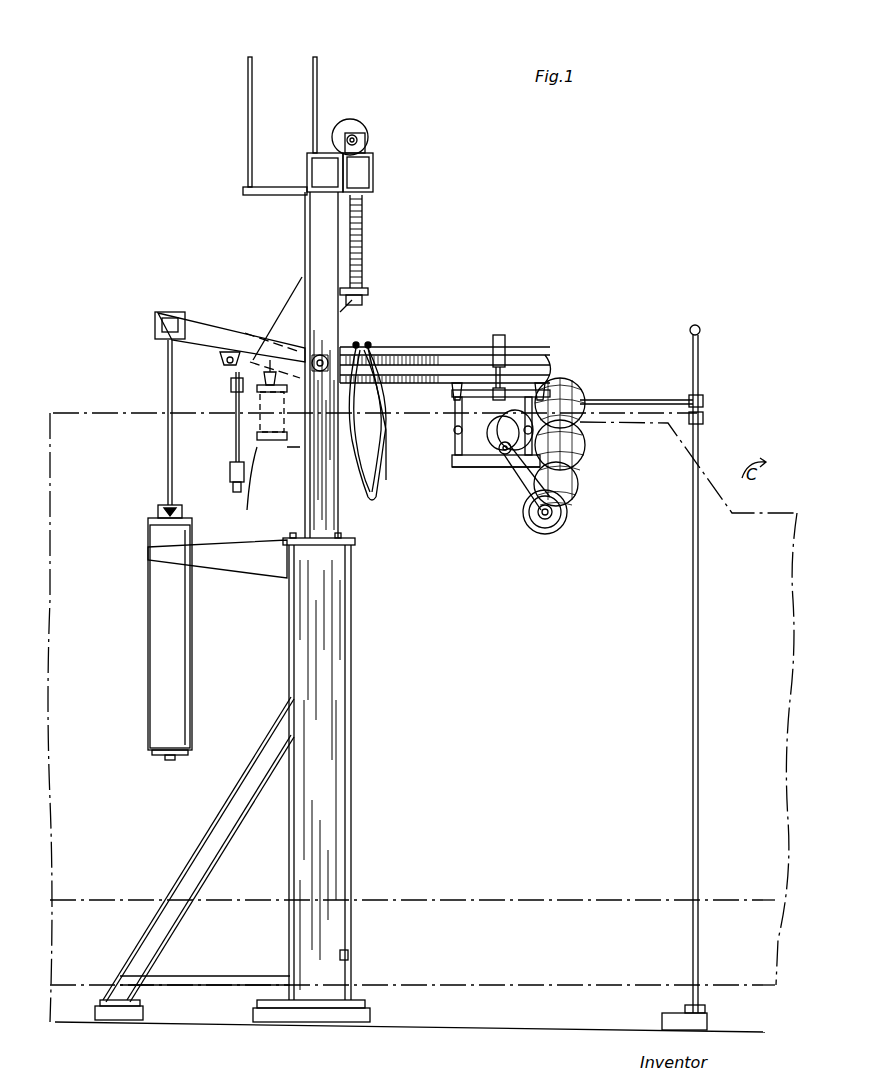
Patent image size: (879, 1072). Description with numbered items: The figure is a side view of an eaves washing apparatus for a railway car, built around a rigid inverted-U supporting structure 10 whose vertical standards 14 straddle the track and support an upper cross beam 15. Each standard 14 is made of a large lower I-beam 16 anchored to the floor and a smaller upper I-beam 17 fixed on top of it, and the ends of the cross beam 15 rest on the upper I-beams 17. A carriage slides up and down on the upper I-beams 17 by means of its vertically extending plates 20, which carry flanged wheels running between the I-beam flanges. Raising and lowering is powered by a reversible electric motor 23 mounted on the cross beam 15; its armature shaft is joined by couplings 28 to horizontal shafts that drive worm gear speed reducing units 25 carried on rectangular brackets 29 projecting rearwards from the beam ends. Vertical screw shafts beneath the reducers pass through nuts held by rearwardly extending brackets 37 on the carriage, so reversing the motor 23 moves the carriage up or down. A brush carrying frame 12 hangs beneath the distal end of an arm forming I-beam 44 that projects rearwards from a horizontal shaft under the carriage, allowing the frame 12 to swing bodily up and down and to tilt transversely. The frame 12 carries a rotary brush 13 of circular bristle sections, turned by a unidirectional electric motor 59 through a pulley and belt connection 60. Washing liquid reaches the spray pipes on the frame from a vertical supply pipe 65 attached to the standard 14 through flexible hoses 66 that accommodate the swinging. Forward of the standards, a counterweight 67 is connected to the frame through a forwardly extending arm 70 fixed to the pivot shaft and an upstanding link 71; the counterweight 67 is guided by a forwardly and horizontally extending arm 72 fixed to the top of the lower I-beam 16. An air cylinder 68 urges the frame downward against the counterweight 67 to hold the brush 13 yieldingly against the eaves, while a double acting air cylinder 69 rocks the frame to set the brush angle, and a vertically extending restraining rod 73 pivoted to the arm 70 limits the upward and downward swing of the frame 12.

The supporting structure 10 is at (280, 866).
The frames 12 is at (484, 472).
The brushes 13 is at (586, 465).
The vertical standards 14 is at (346, 748).
The upper cross beam 15 is at (308, 170).
The lower I-beams 16 is at (350, 652).
The upper I-beams 17 is at (308, 242).
The vertically extending plates 20 is at (292, 312).
The reversible electric motor 23 is at (352, 122).
The speed reducing units 25 is at (367, 143).
The couplings 28 is at (363, 222).
The rectangular brackets 29 is at (374, 172).
The rearwardly extending brackets 37 is at (362, 300).
The arm forming I-beam 44 is at (426, 355).
The unidirectional electric motor 59 is at (495, 438).
The pulley and belt connection 60 is at (582, 511).
The supply pipes 65 is at (356, 528).
The flexible hoses 66 is at (384, 488).
The counterweights 67 is at (180, 640).
The air cylinders 68 is at (234, 435).
The double acting air cylinders 69 is at (507, 340).
The forwardly extending arms 70 is at (212, 322).
The upstanding links 71 is at (165, 384).
The forwardly and horizontally extending arms 72 is at (258, 572).
The restraining rods 73 is at (236, 405).